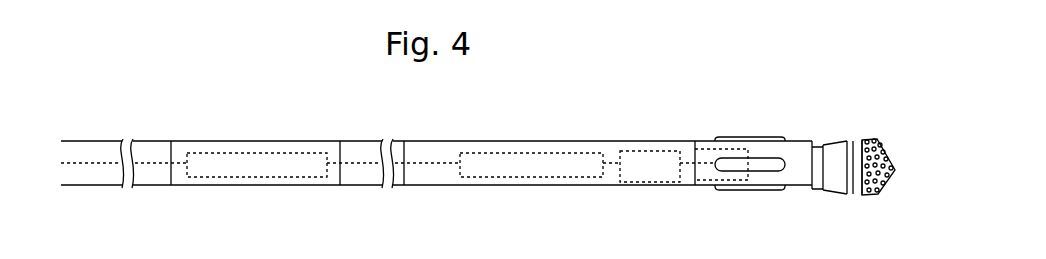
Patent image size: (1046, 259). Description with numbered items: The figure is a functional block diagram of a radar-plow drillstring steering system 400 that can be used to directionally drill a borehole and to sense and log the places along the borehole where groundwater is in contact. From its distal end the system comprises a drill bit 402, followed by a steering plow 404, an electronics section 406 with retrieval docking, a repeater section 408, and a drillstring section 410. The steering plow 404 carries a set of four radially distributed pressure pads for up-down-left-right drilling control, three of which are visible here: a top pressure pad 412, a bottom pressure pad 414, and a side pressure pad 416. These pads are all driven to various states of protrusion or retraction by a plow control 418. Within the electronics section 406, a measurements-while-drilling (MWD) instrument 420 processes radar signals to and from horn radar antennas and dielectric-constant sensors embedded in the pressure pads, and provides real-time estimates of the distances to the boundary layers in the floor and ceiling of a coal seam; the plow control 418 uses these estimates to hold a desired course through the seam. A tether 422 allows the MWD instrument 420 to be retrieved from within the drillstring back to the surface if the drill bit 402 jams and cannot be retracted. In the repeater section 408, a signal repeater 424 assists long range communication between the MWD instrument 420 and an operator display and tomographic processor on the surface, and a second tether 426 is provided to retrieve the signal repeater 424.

The radar-plow drillstring steering system 400 is at (682, 72).
The drill bit 402 is at (883, 194).
The steering plow 404 is at (799, 148).
The electronics section 406 is at (427, 186).
The repeater section 408 is at (315, 140).
The drillstring section 410 is at (88, 141).
The top pressure pad 412 is at (723, 137).
The bottom pressure pad 414 is at (717, 192).
The side pressure pad 416 is at (783, 188).
The plow control 418 is at (622, 175).
The measurements-while-drilling (MWD) instrument 420 is at (482, 177).
The tether 422 is at (443, 160).
The signal repeater 424 is at (208, 176).
The second tether 426 is at (103, 165).